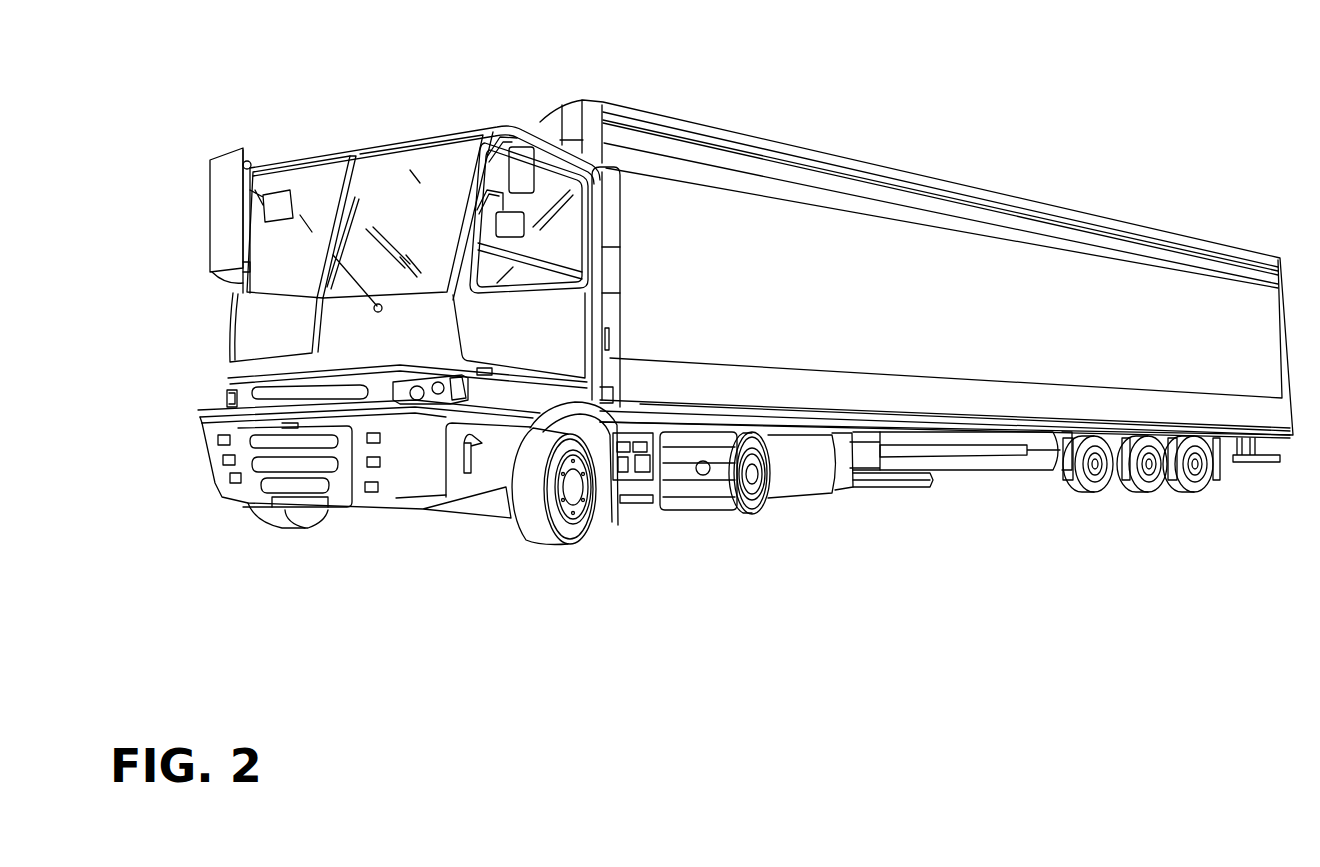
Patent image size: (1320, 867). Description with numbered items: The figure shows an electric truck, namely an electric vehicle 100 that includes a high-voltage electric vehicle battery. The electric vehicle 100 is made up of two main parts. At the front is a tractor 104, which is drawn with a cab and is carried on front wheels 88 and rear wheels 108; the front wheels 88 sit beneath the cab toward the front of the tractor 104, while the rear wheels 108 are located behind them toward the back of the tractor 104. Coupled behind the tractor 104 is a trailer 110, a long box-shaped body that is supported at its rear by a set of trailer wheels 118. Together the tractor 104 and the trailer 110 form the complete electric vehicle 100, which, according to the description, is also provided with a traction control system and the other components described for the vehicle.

The electric vehicle 100 is at (314, 112).
The tractor 104 is at (413, 148).
The front wheels 88 is at (535, 528).
The rear wheels 108 is at (760, 520).
The trailer 110 is at (990, 210).
The trailer wheels 118 is at (1140, 483).